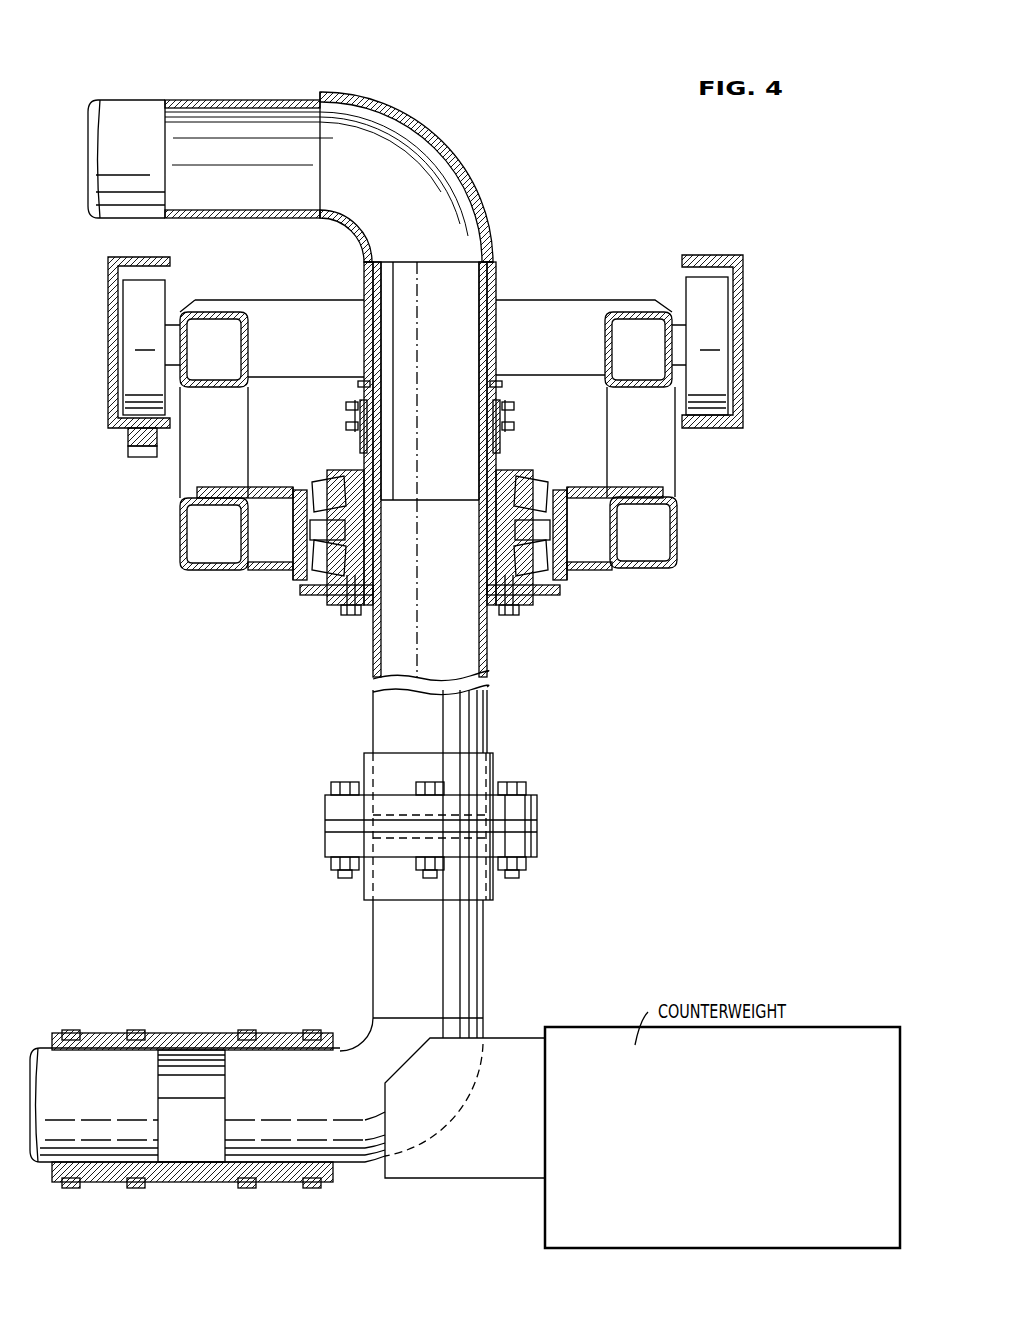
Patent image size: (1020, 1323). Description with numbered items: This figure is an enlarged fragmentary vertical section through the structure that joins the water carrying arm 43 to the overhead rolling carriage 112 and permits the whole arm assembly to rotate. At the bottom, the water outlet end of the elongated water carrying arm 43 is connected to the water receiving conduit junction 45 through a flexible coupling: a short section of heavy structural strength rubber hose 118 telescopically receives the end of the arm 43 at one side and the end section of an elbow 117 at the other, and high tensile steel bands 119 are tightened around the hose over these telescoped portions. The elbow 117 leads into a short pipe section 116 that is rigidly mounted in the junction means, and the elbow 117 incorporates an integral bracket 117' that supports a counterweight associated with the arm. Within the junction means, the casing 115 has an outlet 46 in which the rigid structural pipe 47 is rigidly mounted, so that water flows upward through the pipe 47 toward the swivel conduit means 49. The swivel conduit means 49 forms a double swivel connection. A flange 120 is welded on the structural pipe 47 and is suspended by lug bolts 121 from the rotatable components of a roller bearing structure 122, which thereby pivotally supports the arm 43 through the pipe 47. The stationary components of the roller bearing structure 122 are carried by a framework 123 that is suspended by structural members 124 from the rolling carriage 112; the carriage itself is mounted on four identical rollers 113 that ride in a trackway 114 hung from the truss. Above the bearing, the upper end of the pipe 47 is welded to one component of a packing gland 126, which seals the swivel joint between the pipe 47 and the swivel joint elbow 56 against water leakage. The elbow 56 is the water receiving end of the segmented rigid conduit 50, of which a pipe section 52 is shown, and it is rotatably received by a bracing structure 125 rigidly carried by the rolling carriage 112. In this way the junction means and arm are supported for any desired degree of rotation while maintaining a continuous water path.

The pipe section 52 is at (196, 100).
The rigid conduit 50 is at (458, 141).
The swivel joint elbow 56 is at (490, 227).
The rigid structural pipe 47 is at (488, 702).
The bracing structure 125 is at (573, 320).
The framework 123 is at (180, 548).
The structural members 124 is at (193, 472).
The trackway 114 is at (108, 322).
The rollers 113 is at (140, 368).
The rolling carriage 112 is at (657, 284).
The packing gland 126 is at (360, 452).
The swivel conduit means 49 is at (507, 457).
The roller bearing structure 122 is at (543, 478).
The flange 120 is at (300, 593).
The lug bolts 121 is at (358, 620).
The outlet 46 is at (497, 763).
The water receiving conduit junction 45 is at (557, 820).
The casing 115 is at (338, 807).
The short pipe section 116 is at (470, 962).
The elbow 117 is at (411, 1114).
The integral bracket 117' is at (465, 1088).
The water carrying arm 43 is at (132, 1115).
The rubber hose 118 is at (225, 1177).
The steel bands 119 is at (132, 1032).